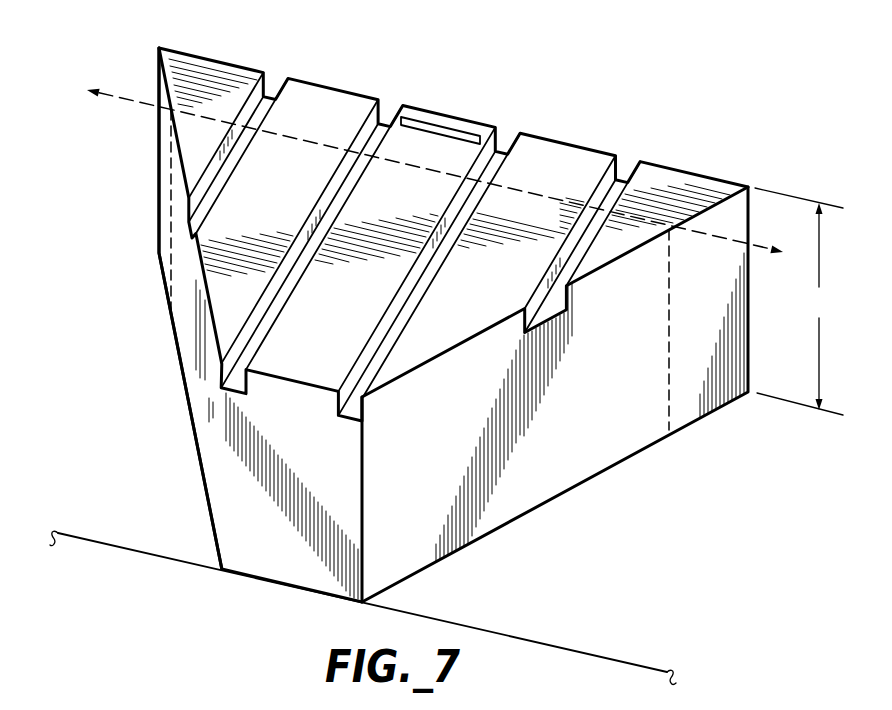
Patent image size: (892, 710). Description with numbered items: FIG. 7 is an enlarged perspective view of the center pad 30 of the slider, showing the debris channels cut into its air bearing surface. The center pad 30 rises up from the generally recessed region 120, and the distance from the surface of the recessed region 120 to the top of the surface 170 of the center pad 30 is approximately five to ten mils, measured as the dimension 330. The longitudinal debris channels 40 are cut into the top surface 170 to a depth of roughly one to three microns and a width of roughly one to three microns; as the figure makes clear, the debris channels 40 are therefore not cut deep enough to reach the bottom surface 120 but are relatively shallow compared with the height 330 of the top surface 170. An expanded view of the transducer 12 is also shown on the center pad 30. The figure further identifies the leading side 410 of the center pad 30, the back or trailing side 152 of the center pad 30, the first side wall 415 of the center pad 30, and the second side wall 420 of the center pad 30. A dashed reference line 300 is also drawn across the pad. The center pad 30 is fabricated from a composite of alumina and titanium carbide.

The center pad 30 is at (157, 38).
The back or trailing side 152 is at (219, 48).
The longitudinal debris channels 40 is at (393, 107).
The transducer 12 is at (445, 126).
The surface 170 is at (669, 194).
The reference plane / axis 300 is at (130, 102).
The dimension 330 is at (799, 301).
The second side wall 420 is at (181, 346).
The recessed region 120 is at (680, 522).
The leading side 410 is at (309, 471).
The first side wall 415 is at (515, 495).